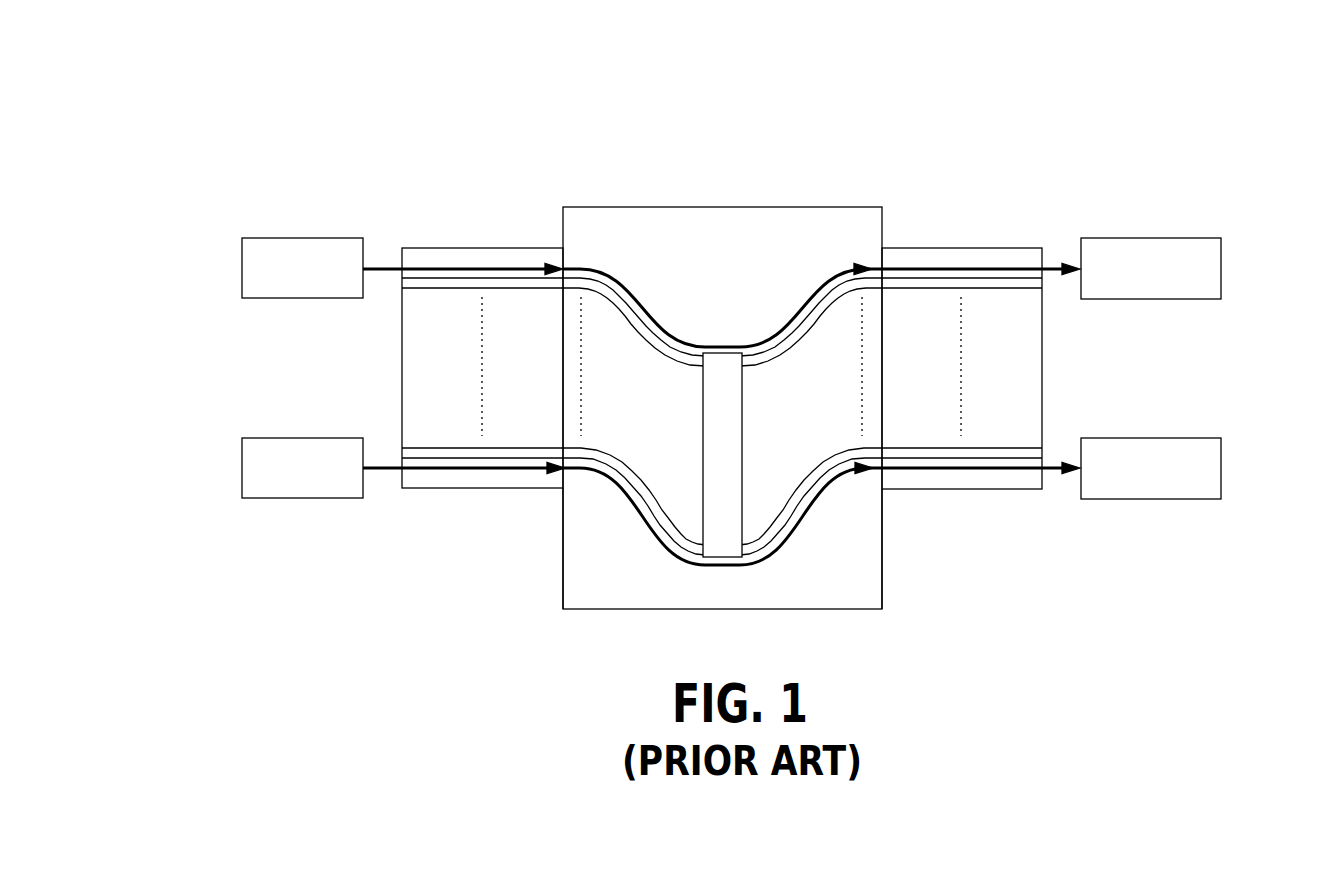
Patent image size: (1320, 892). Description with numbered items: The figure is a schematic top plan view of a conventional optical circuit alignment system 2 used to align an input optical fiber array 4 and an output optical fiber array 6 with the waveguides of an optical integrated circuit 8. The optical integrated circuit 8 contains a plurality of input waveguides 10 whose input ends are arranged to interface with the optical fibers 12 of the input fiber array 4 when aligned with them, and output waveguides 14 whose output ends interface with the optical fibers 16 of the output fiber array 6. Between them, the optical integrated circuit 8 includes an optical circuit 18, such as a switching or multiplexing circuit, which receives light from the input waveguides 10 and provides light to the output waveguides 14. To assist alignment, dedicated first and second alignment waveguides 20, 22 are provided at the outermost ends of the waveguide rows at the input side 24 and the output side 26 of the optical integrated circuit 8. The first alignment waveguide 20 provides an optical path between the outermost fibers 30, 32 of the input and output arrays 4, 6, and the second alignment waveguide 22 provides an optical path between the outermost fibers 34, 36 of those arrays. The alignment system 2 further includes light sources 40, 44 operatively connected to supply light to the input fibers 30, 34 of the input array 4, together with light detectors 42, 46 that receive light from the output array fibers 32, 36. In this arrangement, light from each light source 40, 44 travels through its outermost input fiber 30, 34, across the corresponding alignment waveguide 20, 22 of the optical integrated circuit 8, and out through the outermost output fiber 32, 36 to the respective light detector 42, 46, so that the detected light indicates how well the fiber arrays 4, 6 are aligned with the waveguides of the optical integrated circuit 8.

The optical circuit alignment system 2 is at (348, 76).
The input optical fiber array 4 is at (483, 247).
The output optical fiber array 6 is at (1003, 248).
The optical integrated circuit 8 is at (863, 208).
The input waveguides 10 is at (575, 278).
The optical fibers 12 is at (467, 279).
The output waveguides 14 is at (842, 280).
The optical fibers 16 is at (953, 288).
The optical circuit 18 is at (743, 407).
The first alignment waveguide 20 is at (625, 282).
The second alignment waveguide 22 is at (693, 563).
The input side 24 is at (563, 550).
The output side 26 is at (883, 549).
The outermost fiber 30 is at (462, 269).
The outermost fiber 32 is at (920, 269).
The outermost fiber 34 is at (462, 460).
The outermost fiber 36 is at (898, 470).
The light source 40 is at (262, 238).
The light detector 42 is at (1203, 238).
The light source 44 is at (262, 438).
The light detector 46 is at (1203, 438).